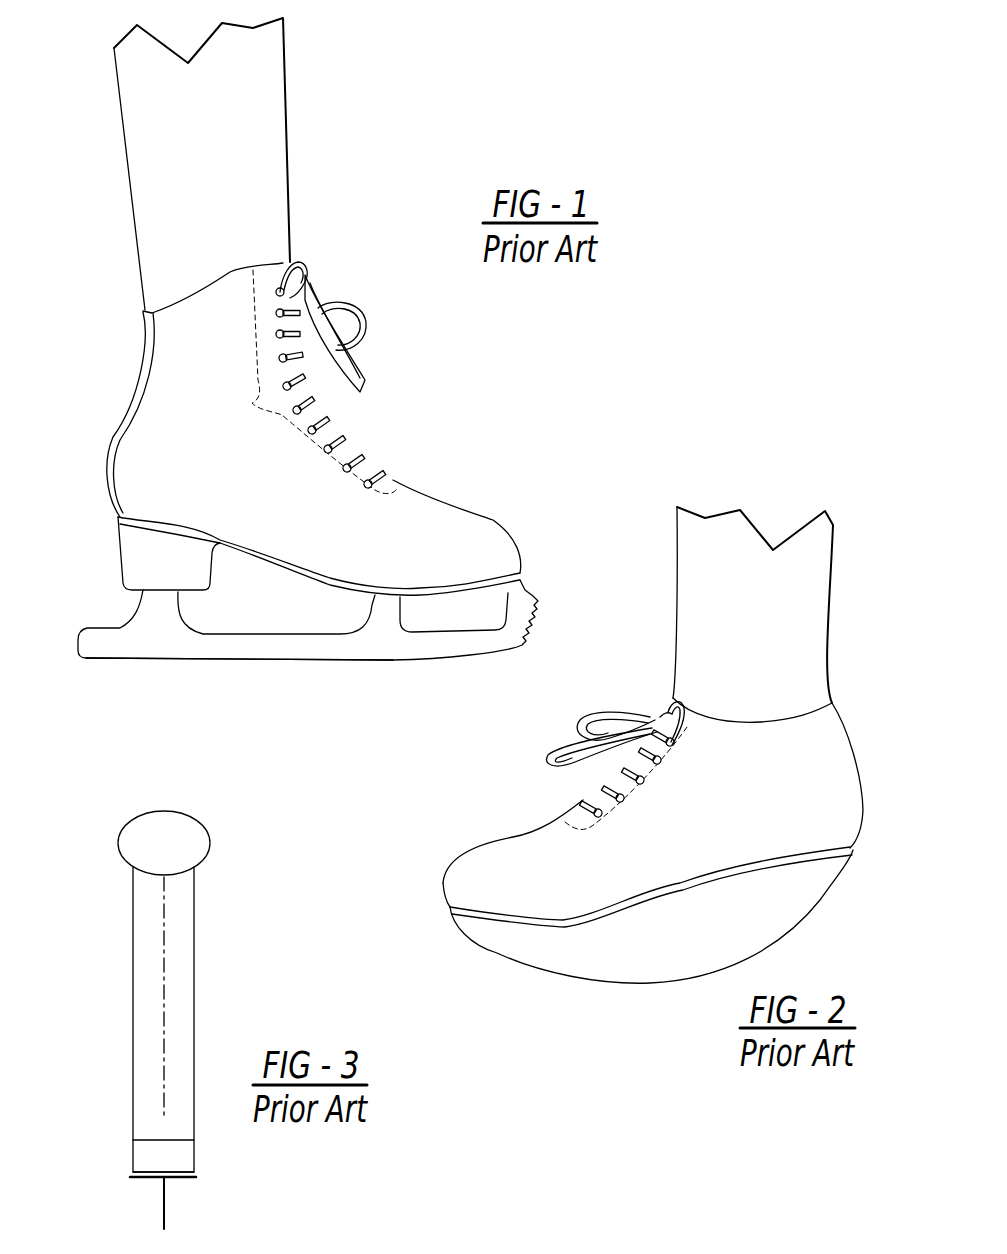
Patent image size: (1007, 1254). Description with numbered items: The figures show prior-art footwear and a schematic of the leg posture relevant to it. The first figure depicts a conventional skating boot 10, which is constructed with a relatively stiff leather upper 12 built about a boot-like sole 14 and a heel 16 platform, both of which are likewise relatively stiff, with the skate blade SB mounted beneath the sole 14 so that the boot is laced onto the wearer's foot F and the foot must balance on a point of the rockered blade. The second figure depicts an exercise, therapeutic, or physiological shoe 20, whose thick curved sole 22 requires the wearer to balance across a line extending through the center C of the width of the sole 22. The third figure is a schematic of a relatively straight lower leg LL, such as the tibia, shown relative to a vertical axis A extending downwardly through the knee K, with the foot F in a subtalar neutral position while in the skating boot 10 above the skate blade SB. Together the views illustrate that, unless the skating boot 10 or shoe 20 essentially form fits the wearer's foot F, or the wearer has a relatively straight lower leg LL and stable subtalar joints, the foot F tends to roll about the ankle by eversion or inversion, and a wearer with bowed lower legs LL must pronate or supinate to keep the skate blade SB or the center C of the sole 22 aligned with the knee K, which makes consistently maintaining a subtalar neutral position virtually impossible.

In FIG. 1, the skating boot 10 is at (467, 443).
In FIG. 3, the skating boot 10 is at (148, 1195).
In FIG. 1, the leather upper 12 is at (469, 509).
In FIG. 1, the sole 14 is at (290, 568).
In FIG. 3, the sole 14 is at (185, 1187).
In FIG. 1, the heel 16 is at (115, 542).
In FIG. 2, the shoe 20 is at (856, 716).
In FIG. 2, the sole 22 is at (663, 952).
In FIG. 1, the lower leg LL is at (300, 161).
In FIG. 2, the lower leg LL is at (648, 612).
In FIG. 3, the lower leg LL is at (108, 935).
In FIG. 1, the skate blade SB is at (203, 664).
In FIG. 3, the skate blade SB is at (172, 1192).
In FIG. 3, the knee K is at (217, 823).
In FIG. 3, the vertical axis A is at (166, 942).
In FIG. 3, the foot F is at (120, 1155).
In FIG. 2, the center C is at (685, 995).